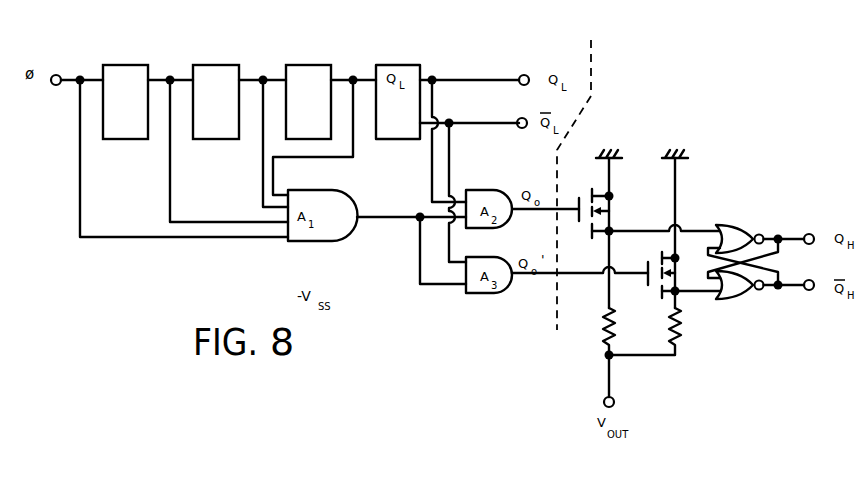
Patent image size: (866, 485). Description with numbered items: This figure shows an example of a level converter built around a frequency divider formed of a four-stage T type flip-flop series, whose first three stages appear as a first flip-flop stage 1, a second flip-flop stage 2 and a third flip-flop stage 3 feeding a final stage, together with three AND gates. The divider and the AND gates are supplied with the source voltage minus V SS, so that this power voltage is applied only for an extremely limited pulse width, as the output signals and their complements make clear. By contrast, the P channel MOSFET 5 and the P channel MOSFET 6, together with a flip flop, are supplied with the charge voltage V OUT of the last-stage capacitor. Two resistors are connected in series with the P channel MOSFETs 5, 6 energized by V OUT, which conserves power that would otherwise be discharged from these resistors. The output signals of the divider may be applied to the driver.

The shift register stage Q1 1 is at (125, 102).
The shift register stage Q2 2 is at (216, 102).
The shift register stage Q3 3 is at (308, 102).
The P channel MOSFET 5 is at (618, 203).
The P channel MOSFET 6 is at (660, 300).